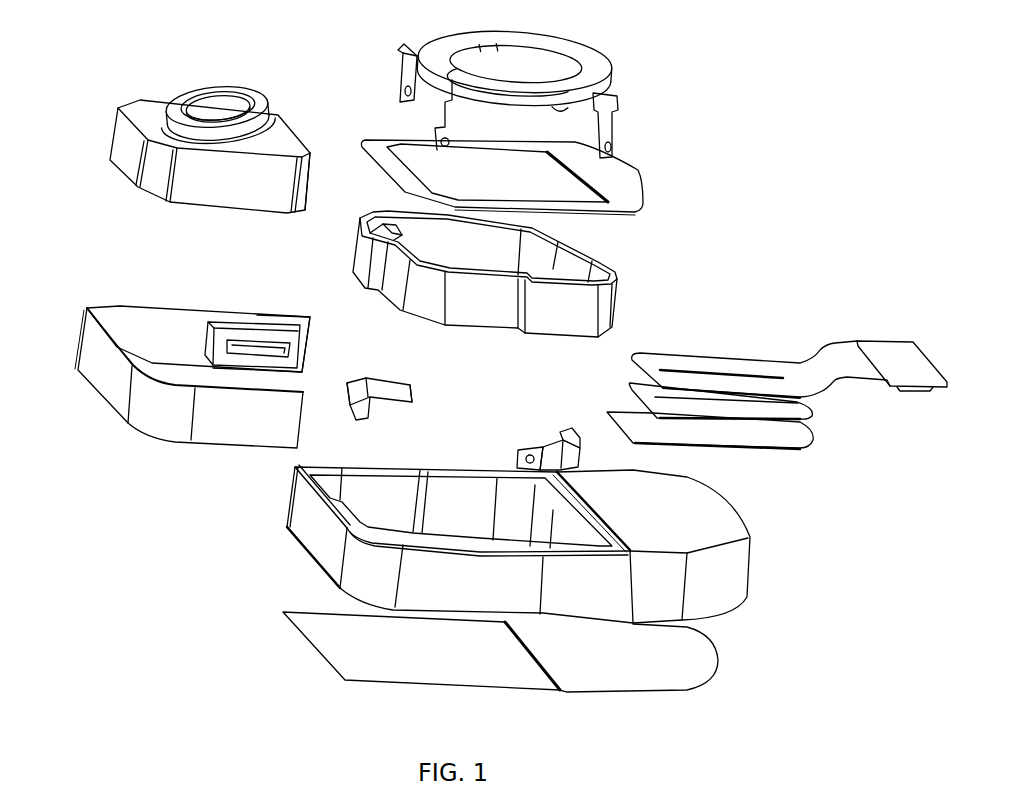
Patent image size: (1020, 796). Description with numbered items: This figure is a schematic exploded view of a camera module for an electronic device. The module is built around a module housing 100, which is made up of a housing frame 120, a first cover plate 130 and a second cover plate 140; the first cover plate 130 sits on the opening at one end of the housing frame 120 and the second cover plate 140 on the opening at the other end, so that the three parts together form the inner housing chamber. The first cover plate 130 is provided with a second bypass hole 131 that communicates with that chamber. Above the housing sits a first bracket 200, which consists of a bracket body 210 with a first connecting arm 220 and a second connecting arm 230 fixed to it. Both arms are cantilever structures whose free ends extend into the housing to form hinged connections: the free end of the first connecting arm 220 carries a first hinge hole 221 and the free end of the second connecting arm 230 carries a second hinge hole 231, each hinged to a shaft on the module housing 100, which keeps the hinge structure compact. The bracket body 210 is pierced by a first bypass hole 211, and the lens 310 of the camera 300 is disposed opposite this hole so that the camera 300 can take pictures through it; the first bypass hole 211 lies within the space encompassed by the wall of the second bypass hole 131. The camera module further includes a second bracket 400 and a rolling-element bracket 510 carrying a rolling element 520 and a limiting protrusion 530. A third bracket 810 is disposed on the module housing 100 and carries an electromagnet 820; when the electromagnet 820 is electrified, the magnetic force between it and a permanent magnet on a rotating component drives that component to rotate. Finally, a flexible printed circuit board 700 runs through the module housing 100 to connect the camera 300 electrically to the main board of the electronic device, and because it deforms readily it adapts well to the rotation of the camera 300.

The module housing 100 is at (466, 578).
The housing frame 120 is at (330, 570).
The first cover plate 130 is at (607, 190).
The second bypass hole 131 is at (613, 205).
The second cover plate 140 is at (337, 655).
The first bracket 200 is at (542, 88).
The bracket body 210 is at (593, 65).
The first bypass hole 211 is at (530, 52).
The first connecting arm 220 is at (447, 108).
The first hinge hole 221 is at (440, 137).
The second connecting arm 230 is at (417, 63).
The second hinge hole 231 is at (405, 88).
The camera 300 is at (133, 105).
The lens 310 is at (197, 96).
The second bracket 400 is at (607, 272).
The rolling-element bracket 510 is at (563, 438).
The rolling element 520 is at (519, 451).
The limiting protrusion 530 is at (578, 445).
The flexible printed circuit board 700 is at (788, 367).
The third bracket 810 is at (108, 313).
The electromagnet 820 is at (249, 335).